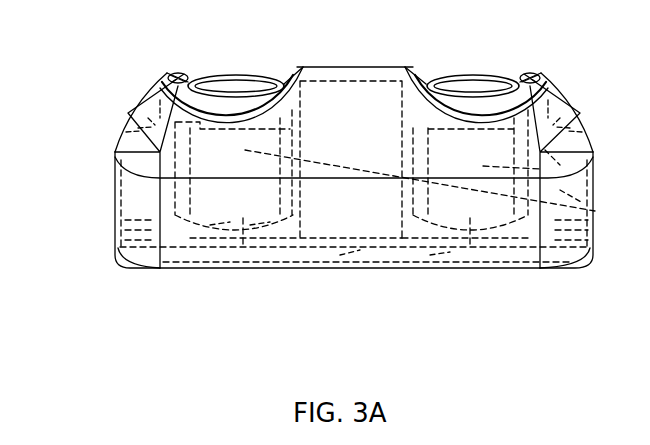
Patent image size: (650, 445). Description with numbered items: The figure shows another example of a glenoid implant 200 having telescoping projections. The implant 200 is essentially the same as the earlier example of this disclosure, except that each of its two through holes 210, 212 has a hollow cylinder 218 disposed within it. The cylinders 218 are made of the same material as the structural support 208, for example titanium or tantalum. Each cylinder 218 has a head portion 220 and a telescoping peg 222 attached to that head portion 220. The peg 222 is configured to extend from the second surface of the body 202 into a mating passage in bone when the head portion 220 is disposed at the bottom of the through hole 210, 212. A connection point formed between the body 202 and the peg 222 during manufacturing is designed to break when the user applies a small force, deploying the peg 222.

The glenoid implant 200 is at (72, 145).
The body 202 is at (133, 110).
The structural support 208 is at (362, 98).
The through hole 210 is at (178, 73).
The through hole 212 is at (532, 73).
The hollow cylinder 218 is at (426, 266).
The head portion 220 is at (232, 100).
The telescoping peg 222 is at (597, 210).